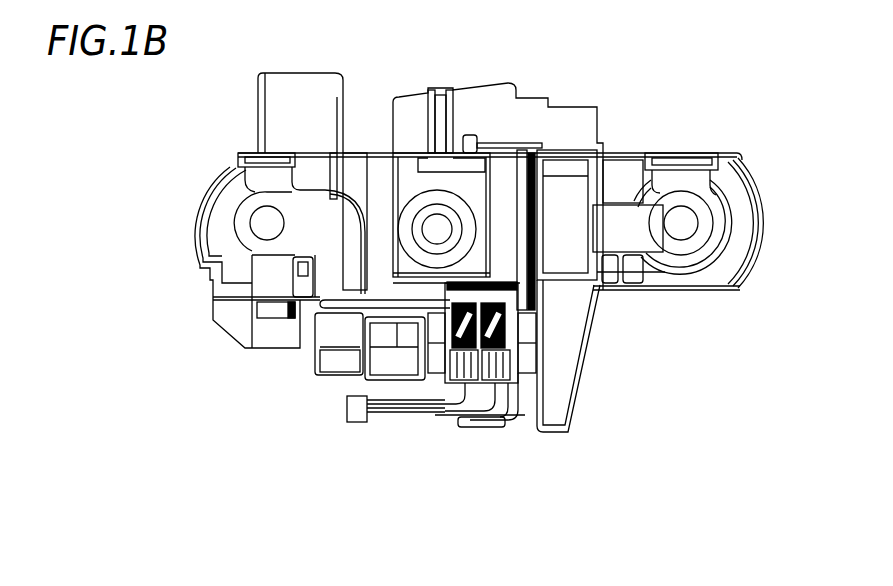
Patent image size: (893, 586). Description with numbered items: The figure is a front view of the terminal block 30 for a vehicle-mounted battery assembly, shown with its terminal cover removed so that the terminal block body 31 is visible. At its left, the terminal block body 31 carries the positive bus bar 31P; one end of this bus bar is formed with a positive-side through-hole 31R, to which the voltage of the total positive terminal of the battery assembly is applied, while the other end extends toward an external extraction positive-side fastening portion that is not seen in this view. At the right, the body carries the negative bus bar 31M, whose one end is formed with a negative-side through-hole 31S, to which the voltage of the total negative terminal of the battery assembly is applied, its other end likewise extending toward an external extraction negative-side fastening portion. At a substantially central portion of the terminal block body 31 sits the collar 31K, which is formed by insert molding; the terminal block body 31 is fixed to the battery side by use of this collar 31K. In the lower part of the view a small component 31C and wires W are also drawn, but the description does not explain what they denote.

The terminal block 30 is at (727, 135).
The terminal block body 31 is at (650, 151).
The collar 31K is at (437, 222).
The positive-side through-hole 31R is at (267, 232).
The positive bus bar 31P is at (332, 272).
The negative bus bar 31M is at (653, 238).
The negative-side through-hole 31S is at (682, 232).
The connector 31C is at (355, 423).
The wire W is at (393, 415).